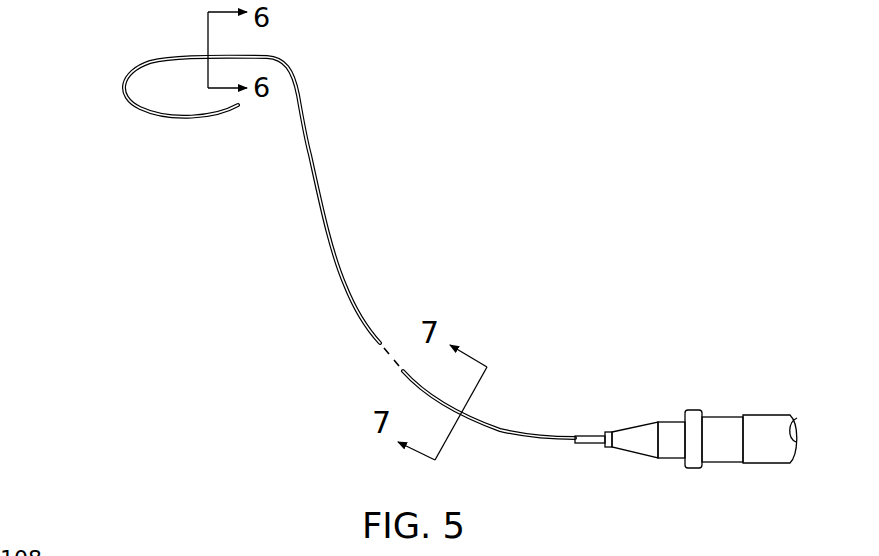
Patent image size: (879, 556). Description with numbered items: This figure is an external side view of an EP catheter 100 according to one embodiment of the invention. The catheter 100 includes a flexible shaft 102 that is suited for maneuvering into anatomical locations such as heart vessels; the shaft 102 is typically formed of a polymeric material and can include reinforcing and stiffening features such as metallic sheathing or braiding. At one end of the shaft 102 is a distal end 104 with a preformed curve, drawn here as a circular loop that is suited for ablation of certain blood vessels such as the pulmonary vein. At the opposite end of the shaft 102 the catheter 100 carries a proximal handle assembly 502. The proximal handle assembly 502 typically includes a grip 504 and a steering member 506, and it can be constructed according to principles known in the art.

The EP catheter 100 is at (287, 347).
The flexible shaft 102 is at (307, 133).
The distal end 104 is at (137, 135).
The proximal handle assembly 502 is at (683, 352).
The grip 504 is at (772, 417).
The steering member 506 is at (690, 410).